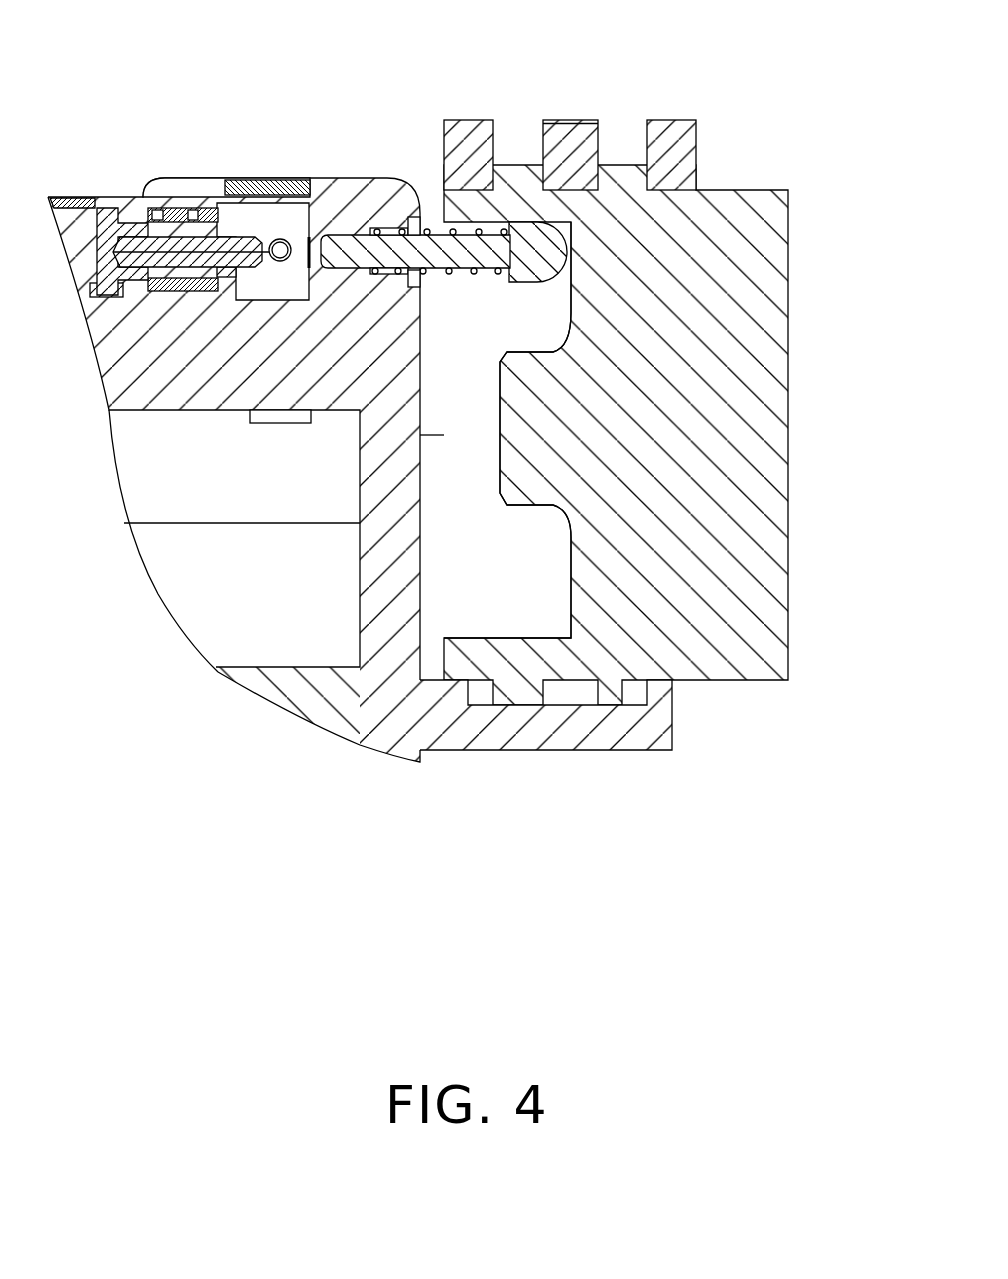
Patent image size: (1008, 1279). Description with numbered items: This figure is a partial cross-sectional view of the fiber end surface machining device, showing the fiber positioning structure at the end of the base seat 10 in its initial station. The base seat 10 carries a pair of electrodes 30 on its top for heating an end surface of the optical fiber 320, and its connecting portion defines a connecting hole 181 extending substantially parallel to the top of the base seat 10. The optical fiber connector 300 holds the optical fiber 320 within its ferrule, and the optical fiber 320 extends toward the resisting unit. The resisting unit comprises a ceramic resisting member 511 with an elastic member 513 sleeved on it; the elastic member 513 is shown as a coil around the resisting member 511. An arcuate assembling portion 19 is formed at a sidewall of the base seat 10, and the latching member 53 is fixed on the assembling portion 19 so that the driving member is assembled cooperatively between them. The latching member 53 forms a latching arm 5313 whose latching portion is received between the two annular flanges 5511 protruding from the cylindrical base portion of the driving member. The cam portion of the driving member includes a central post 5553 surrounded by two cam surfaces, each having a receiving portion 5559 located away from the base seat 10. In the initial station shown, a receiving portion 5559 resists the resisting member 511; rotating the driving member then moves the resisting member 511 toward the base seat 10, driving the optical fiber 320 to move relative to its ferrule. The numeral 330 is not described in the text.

The base seat 10 is at (132, 362).
The assembling portion 19 is at (603, 732).
The electrode 30 is at (280, 248).
The latching member 53 is at (678, 133).
The connecting hole 181 is at (313, 248).
The optical fiber connector 300 is at (65, 198).
The optical fiber 320 is at (183, 237).
The bushing 330 is at (128, 218).
The resisting member 511 is at (375, 247).
The elastic member 513 is at (502, 222).
The latching arm 5313 is at (567, 137).
The annular flange 5511 is at (619, 176).
The post 5553 is at (503, 422).
The receiving portion 5559 is at (572, 302).